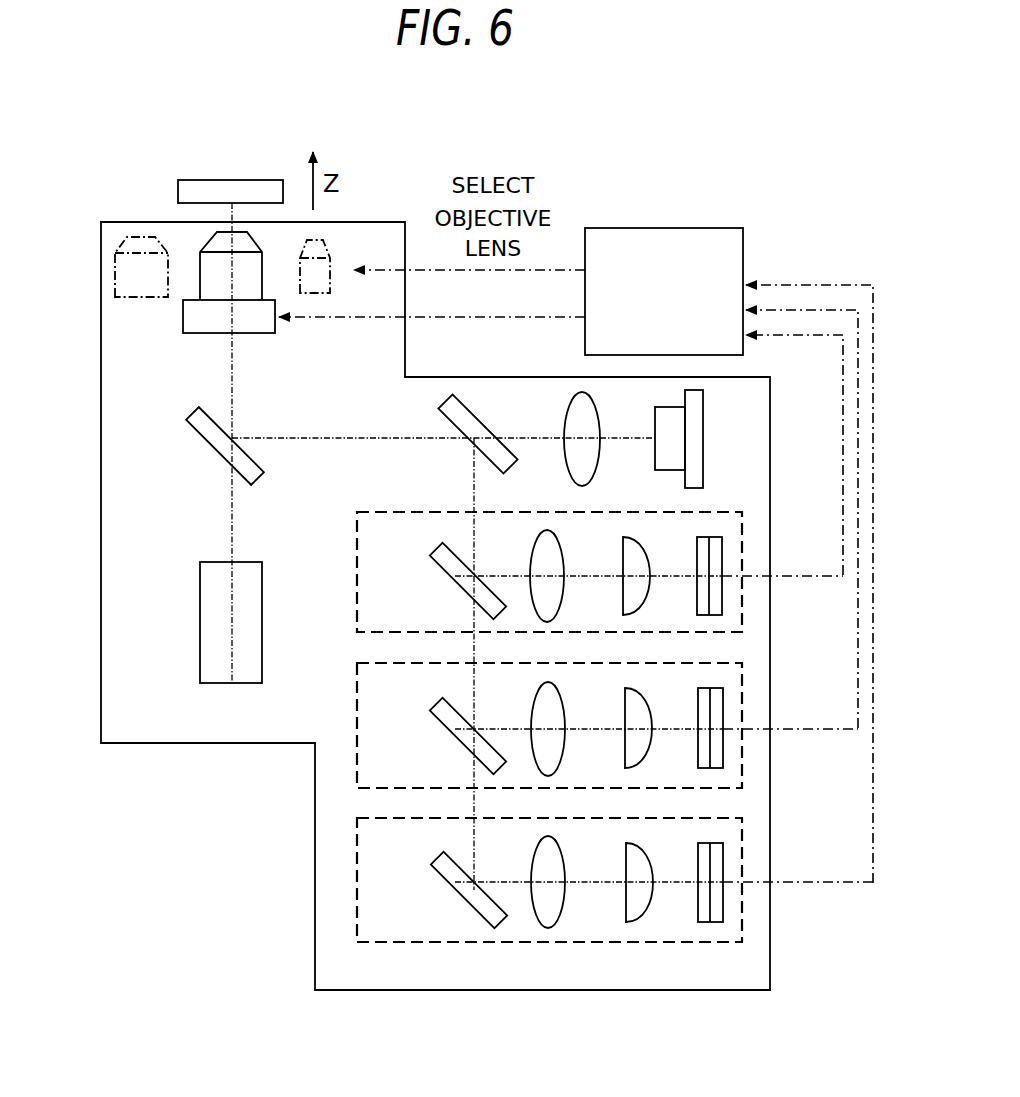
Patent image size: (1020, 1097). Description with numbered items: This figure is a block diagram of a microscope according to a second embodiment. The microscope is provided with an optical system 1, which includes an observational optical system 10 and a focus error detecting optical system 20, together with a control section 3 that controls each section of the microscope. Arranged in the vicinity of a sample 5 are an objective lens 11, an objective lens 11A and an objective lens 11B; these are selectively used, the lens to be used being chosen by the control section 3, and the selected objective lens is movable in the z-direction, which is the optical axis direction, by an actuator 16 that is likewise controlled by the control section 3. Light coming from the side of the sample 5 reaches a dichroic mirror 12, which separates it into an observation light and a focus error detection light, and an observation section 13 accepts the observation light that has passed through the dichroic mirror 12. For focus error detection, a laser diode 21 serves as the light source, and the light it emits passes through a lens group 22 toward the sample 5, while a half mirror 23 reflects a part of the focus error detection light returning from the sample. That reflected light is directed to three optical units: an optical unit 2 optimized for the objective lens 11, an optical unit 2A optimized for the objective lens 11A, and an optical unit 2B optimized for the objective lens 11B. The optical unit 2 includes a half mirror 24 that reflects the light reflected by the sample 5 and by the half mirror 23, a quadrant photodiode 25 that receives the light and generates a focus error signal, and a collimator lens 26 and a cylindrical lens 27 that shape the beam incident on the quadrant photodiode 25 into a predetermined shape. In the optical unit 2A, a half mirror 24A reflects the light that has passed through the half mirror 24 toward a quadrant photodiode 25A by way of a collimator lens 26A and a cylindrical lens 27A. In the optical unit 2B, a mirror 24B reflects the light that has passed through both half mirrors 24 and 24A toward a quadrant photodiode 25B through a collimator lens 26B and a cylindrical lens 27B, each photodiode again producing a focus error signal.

The optical system 1 is at (315, 950).
The optical unit 2 is at (740, 612).
The optical unit 2A is at (740, 765).
The optical unit 2B is at (740, 918).
The control section 3 is at (665, 228).
The sample 5 is at (229, 180).
The observational optical system 10 is at (225, 706).
The objective lens 11 is at (210, 233).
The objective lens 11A is at (115, 253).
The objective lens 11B is at (330, 255).
The dichroic mirror 12 is at (195, 425).
The observation section 13 is at (200, 600).
The actuator 16 is at (183, 315).
The focus error detecting optical system 20 is at (607, 952).
The laser diode 21 is at (703, 405).
The lens group 22 is at (566, 410).
The half mirror 23 is at (455, 395).
The half mirror 24 is at (442, 569).
The half mirror 24A is at (442, 722).
The mirror 24B is at (443, 875).
The quadrant photodiode 25 is at (697, 560).
The quadrant photodiode 25A is at (698, 712).
The quadrant photodiode 25B is at (698, 865).
The collimator lens 26 is at (538, 560).
The collimator lens 26A is at (537, 712).
The collimator lens 26B is at (537, 865).
The cylindrical lens 27 is at (622, 560).
The cylindrical lens 27A is at (624, 712).
The cylindrical lens 27B is at (625, 865).